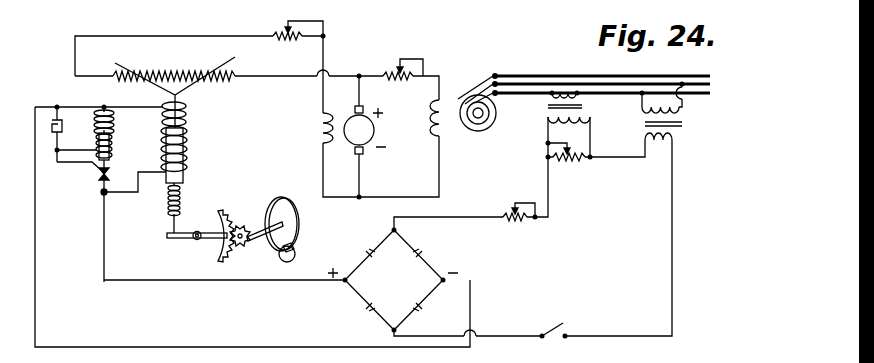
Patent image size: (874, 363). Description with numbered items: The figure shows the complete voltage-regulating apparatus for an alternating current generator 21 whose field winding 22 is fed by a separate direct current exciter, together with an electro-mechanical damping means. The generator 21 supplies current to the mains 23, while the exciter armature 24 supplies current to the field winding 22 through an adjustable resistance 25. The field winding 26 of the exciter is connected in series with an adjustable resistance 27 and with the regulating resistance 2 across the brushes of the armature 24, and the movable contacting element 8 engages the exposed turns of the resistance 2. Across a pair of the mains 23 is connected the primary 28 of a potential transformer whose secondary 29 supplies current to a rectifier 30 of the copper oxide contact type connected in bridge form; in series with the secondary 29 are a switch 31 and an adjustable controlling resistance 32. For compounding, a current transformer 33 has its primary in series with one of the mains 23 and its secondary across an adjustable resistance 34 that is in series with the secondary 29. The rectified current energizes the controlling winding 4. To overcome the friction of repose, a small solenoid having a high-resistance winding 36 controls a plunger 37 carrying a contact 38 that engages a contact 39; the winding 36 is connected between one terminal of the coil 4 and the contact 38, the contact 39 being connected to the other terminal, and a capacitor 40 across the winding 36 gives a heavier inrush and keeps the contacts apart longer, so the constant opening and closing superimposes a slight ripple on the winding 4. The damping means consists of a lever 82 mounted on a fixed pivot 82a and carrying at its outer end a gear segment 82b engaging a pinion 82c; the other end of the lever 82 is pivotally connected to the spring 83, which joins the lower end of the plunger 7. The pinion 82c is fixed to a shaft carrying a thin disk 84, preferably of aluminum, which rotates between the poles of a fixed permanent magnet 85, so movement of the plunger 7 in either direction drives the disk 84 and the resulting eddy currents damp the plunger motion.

The regulating resistance 2 is at (170, 74).
The controlling winding 4 is at (188, 127).
The plunger 7 is at (183, 177).
The movable contacting element 8 is at (186, 89).
The generator 21 is at (477, 131).
The field winding 22 is at (434, 114).
The mains 23 is at (597, 72).
The armature 24 is at (365, 130).
The adjustable resistance 25 is at (396, 80).
The field winding 26 is at (322, 122).
The adjustable resistance 27 is at (292, 42).
The primary 28 is at (645, 104).
The secondary 29 is at (661, 144).
The rectifier 30 is at (393, 280).
The switch 31 is at (557, 330).
The adjustable controlling resistance 32 is at (526, 218).
The current transformer 33 is at (550, 107).
The adjustable resistance 34 is at (568, 163).
The winding 36 is at (113, 119).
The plunger 37 is at (110, 157).
The contact 38 is at (98, 172).
The contact 39 is at (102, 195).
The capacitor 40 is at (63, 127).
The lever 82 is at (213, 230).
The fixed pivot 82a is at (196, 241).
The gear segment 82b is at (258, 199).
The pinion 82c is at (245, 242).
The spring 83 is at (167, 203).
The thin disk 84 is at (284, 211).
The permanent magnet 85 is at (296, 257).